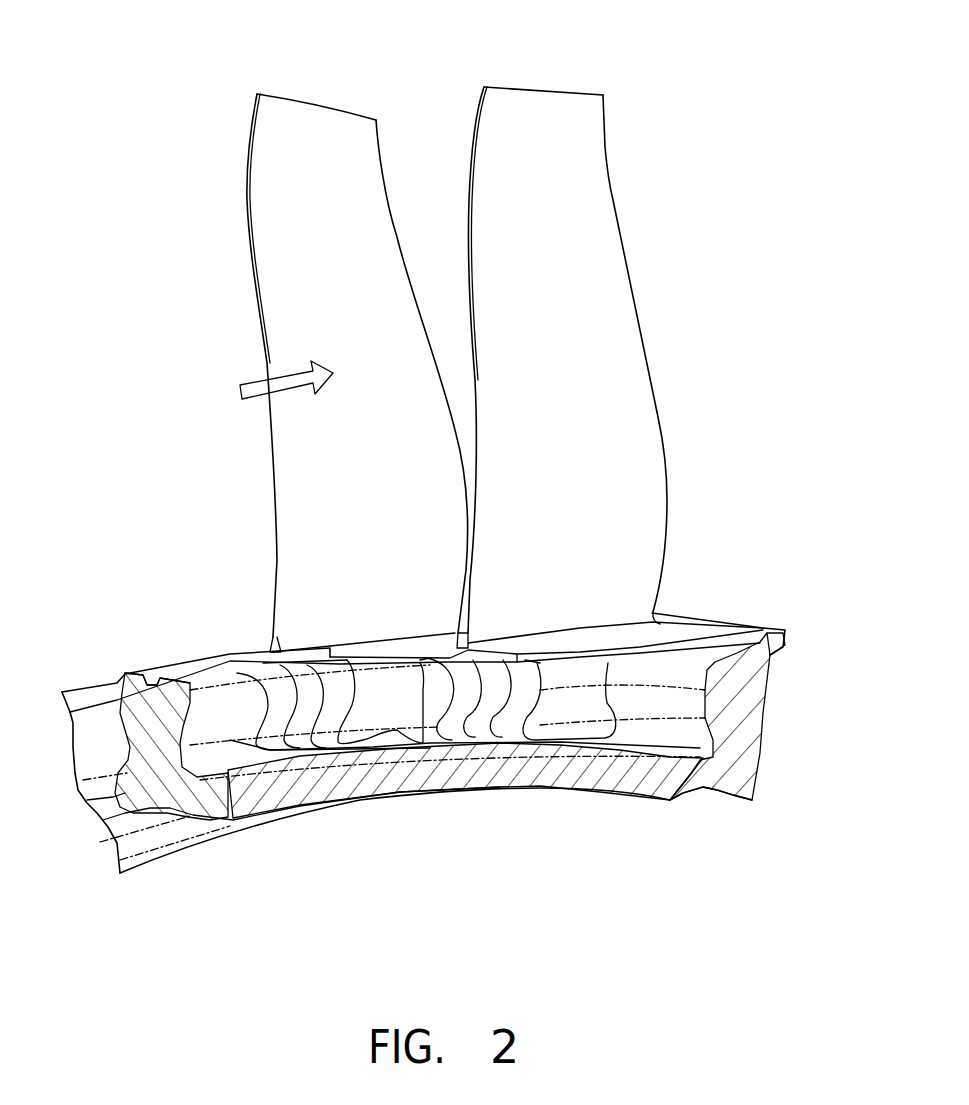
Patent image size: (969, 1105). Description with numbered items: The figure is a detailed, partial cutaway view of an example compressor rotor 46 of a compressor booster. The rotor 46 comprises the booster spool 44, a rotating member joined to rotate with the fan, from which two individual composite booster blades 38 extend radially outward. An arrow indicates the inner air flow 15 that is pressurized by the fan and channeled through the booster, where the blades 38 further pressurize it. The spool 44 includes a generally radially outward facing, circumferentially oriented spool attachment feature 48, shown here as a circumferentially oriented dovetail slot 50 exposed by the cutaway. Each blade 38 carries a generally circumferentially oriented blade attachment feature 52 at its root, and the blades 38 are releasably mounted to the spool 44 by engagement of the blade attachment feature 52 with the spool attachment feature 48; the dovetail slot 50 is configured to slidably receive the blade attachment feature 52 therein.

The inner air flow 15 is at (250, 380).
The composite booster blades 38 is at (412, 103).
The booster spool 44 is at (92, 870).
The compressor rotor 46 is at (206, 50).
The spool attachment feature 48 is at (152, 670).
The dovetail slot 50 is at (680, 762).
The blade attachment feature 52 is at (485, 715).